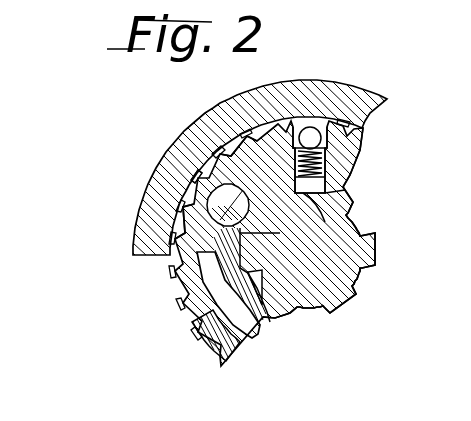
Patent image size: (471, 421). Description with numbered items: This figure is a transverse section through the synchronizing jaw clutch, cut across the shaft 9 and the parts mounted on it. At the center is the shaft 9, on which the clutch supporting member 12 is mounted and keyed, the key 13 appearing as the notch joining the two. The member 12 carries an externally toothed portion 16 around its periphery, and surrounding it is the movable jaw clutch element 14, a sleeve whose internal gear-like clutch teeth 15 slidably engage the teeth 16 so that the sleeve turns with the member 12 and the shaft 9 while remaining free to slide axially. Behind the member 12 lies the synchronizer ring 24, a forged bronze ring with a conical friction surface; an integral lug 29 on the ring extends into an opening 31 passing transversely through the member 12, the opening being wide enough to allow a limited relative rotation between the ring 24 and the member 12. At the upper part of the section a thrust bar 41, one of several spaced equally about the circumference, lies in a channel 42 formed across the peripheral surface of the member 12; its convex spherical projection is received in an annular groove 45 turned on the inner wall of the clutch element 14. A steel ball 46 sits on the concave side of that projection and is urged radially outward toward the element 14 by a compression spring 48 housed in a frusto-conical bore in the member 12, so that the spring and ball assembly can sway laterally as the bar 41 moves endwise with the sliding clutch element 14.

The shaft 9 is at (343, 248).
The clutch supporting member 12 is at (217, 167).
The key 13 is at (327, 222).
The movable jaw clutch element 14 is at (360, 90).
The internal clutch teeth 15 is at (232, 150).
The externally toothed portion 16 is at (258, 138).
The synchronizer ring 24 is at (192, 182).
The lug 29 is at (205, 220).
The opening 31 is at (197, 257).
The thrust bar 41 is at (213, 293).
The channel 42 is at (355, 160).
The annular groove 45 is at (176, 212).
The steel ball 46 is at (309, 132).
The compression spring 48 is at (323, 168).